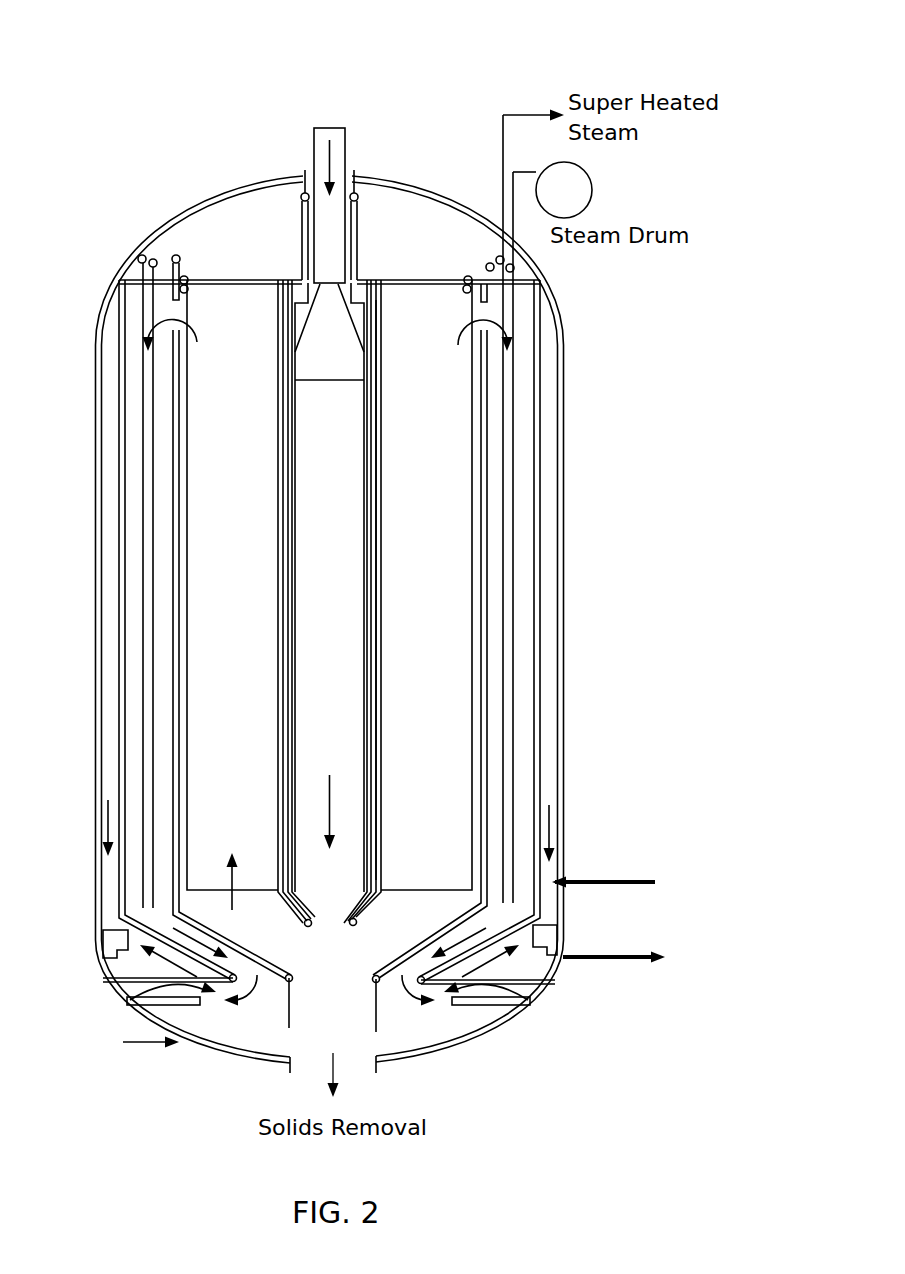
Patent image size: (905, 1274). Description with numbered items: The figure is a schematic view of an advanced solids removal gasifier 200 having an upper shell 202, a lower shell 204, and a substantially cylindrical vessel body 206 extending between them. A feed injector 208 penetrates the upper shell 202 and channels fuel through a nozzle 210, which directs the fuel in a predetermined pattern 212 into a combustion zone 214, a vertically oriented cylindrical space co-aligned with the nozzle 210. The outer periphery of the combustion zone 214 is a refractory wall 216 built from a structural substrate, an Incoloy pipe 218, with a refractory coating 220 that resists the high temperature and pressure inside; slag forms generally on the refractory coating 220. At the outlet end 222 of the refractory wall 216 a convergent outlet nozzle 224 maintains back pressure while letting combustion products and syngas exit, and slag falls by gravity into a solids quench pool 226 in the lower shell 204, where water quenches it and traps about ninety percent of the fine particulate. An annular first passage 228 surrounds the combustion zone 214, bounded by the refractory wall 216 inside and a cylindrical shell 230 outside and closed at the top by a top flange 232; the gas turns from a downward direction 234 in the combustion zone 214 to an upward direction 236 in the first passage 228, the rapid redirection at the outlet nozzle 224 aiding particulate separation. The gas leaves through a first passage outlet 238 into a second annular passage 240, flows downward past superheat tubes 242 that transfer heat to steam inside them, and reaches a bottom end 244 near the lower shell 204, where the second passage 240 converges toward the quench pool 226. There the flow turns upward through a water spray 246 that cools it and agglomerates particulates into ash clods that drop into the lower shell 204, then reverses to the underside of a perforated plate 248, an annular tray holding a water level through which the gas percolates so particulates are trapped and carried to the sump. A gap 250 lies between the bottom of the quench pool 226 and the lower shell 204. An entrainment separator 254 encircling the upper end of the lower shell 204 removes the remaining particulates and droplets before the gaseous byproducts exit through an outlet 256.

The advanced solids removal gasifier 200 is at (166, 90).
The upper shell 202 is at (180, 203).
The lower shell 204 is at (145, 1042).
The vessel body 206 is at (563, 534).
The feed injector 208 is at (349, 136).
The nozzle 210 is at (307, 287).
The predetermined pattern 212 is at (347, 367).
The combustion zone 214 is at (352, 420).
The refractory wall 216 is at (365, 646).
The Incoloy pipe 218 is at (375, 610).
The refractory coating 220 is at (384, 561).
The outlet end 222 is at (394, 902).
The convergent outlet nozzle 224 is at (367, 915).
The solids quench pool 226 is at (372, 1005).
The first passage 228 is at (251, 458).
The cylindrical shell 230 is at (485, 467).
The top flange 232 is at (402, 277).
The downward direction 234 is at (332, 803).
The upward direction 236 is at (143, 873).
The first passage outlet 238 is at (486, 297).
The second annular passage 240 is at (133, 447).
The superheat tubes 242 is at (520, 398).
The bottom end 244 is at (172, 903).
The water spray 246 is at (128, 1002).
The perforated plate 248 is at (118, 990).
The gap 250 is at (290, 1043).
The entrainment separator 254 is at (103, 940).
The outlet 256 is at (565, 960).